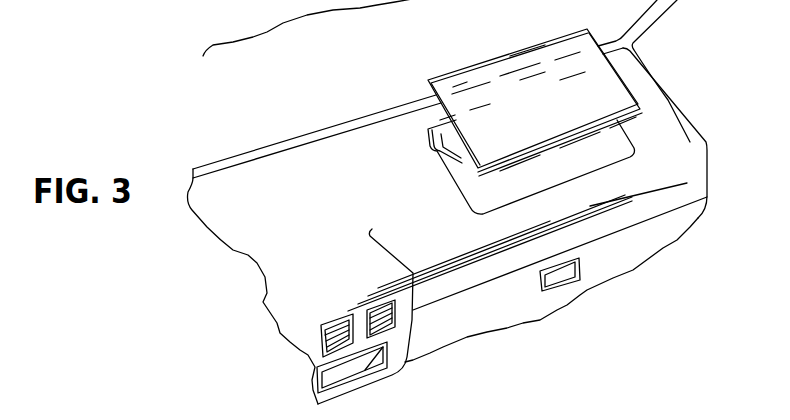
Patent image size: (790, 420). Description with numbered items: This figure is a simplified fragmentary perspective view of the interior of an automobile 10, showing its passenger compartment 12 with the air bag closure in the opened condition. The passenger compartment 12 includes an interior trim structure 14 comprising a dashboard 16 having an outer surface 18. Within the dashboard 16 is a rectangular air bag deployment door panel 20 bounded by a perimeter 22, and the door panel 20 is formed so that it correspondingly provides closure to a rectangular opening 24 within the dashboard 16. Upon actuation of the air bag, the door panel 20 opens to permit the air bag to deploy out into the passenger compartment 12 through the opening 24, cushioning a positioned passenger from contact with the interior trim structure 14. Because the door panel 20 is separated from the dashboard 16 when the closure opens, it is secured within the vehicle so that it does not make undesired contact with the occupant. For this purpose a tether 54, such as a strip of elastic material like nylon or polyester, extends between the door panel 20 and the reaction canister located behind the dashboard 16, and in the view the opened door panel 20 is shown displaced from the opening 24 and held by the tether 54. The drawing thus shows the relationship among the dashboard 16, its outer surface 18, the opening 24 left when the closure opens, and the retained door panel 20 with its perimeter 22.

The automobile 10 is at (192, 155).
The passenger compartment 12 is at (567, 318).
The interior trim structure 14 is at (285, 196).
The dashboard 16 is at (657, 126).
The outer surface 18 is at (360, 153).
The air bag deployment door panel 20 is at (535, 93).
The perimeter 22 is at (472, 62).
The rectangular opening 24 is at (608, 160).
The tether 54 is at (432, 148).